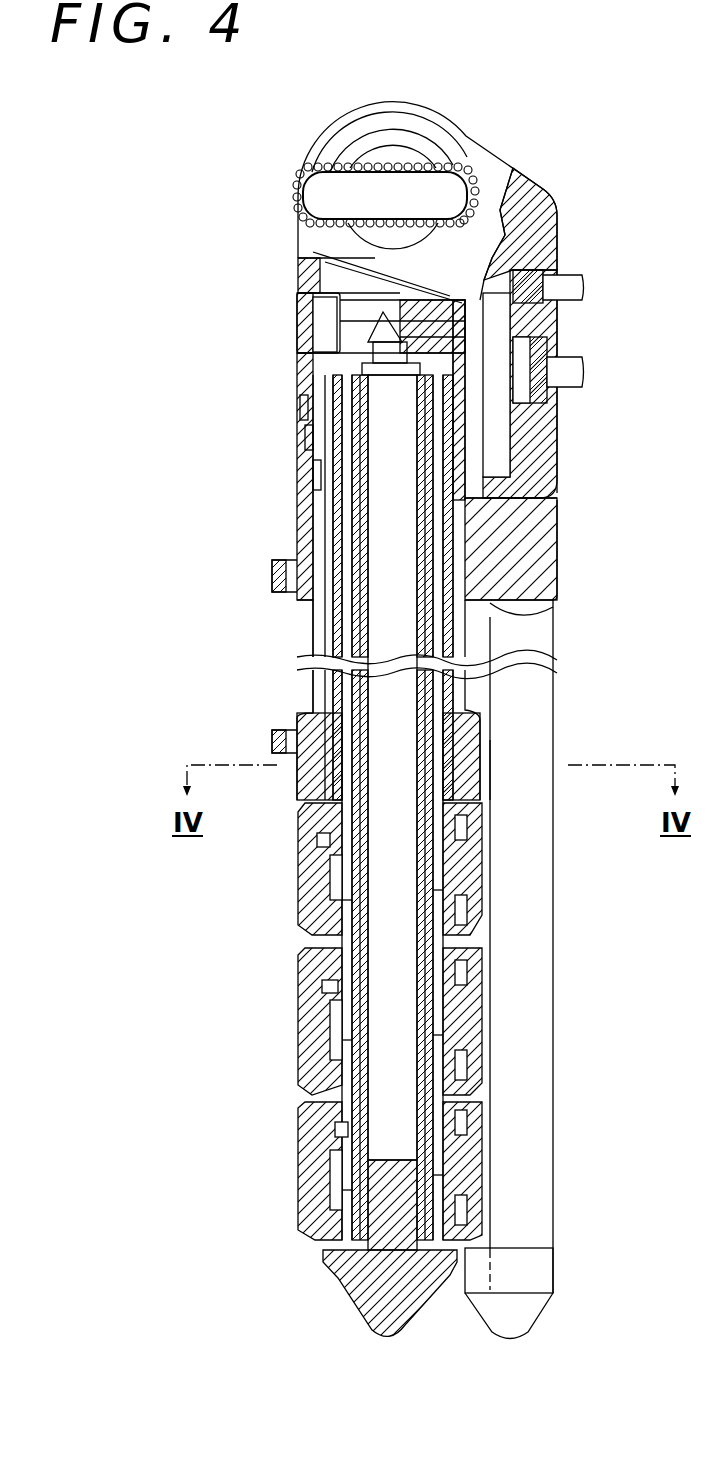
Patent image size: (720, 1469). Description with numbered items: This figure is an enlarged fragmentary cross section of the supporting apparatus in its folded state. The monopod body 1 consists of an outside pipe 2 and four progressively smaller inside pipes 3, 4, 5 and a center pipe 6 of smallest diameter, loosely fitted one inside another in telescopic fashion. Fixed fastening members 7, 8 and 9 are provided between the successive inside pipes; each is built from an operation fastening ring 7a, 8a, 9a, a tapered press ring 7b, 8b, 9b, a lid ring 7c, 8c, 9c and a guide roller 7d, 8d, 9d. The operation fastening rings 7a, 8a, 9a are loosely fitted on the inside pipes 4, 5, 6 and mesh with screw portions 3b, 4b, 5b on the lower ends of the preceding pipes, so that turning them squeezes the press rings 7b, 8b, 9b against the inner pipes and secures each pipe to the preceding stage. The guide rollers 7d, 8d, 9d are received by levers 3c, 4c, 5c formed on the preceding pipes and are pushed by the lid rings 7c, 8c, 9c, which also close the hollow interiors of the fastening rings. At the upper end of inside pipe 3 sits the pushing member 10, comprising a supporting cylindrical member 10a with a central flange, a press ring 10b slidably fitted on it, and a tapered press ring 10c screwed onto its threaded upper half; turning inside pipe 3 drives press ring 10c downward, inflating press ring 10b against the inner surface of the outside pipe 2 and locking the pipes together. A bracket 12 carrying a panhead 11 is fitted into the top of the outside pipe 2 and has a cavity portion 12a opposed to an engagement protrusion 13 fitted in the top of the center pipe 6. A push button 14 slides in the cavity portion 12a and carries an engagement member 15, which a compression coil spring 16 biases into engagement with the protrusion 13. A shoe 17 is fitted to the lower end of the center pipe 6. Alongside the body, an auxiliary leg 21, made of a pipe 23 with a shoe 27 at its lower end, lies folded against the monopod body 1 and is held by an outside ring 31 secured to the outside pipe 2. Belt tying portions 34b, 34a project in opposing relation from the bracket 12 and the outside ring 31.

The monopod body 1 is at (305, 620).
The outside pipe 2 is at (305, 627).
The inside pipe 3 is at (313, 656).
The screw portion 3b is at (445, 887).
The lever 3c is at (310, 895).
The inside pipe 4 is at (313, 675).
The screw portion 4b is at (445, 1035).
The lever 4c is at (310, 1038).
The inside pipe 5 is at (313, 693).
The screw portion 5b is at (440, 1175).
The lever 5c is at (310, 1187).
The center pipe 6 is at (300, 713).
The fixed fastening member 7 is at (298, 862).
The operation fastening ring 7a is at (305, 890).
The tapered press ring 7b is at (475, 935).
The lid ring 7c is at (470, 827).
The guide roller 7d is at (320, 835).
The fixed fastening member 8 is at (298, 1025).
The operation fastening ring 8a is at (313, 1062).
The tapered press ring 8b is at (455, 1080).
The lid ring 8c is at (470, 985).
The guide roller 8d is at (318, 985).
The fixed fastening member 9 is at (298, 1170).
The operation fastening ring 9a is at (312, 1215).
The tapered press ring 9b is at (468, 1210).
The lid ring 9c is at (470, 1122).
The guide roller 9d is at (322, 1132).
The pushing member 10 is at (303, 492).
The supporting cylindrical member 10a is at (313, 472).
The press ring 10b is at (308, 437).
The press ring 10c is at (306, 410).
The panhead 11 is at (530, 330).
The bracket 12 is at (303, 378).
The cavity portion 12a is at (297, 296).
The engagement protrusion 13 is at (300, 333).
The push button 14 is at (297, 330).
The engagement member 15 is at (305, 385).
The compression coil spring 16 is at (545, 400).
The shoe 17 is at (360, 1310).
The auxiliary leg 21 is at (560, 688).
The pipe 23 is at (540, 788).
The shoe 27 is at (525, 1315).
The outside ring 31 is at (520, 745).
The belt tying portion 34a is at (272, 740).
The belt tying portion 34b is at (272, 575).